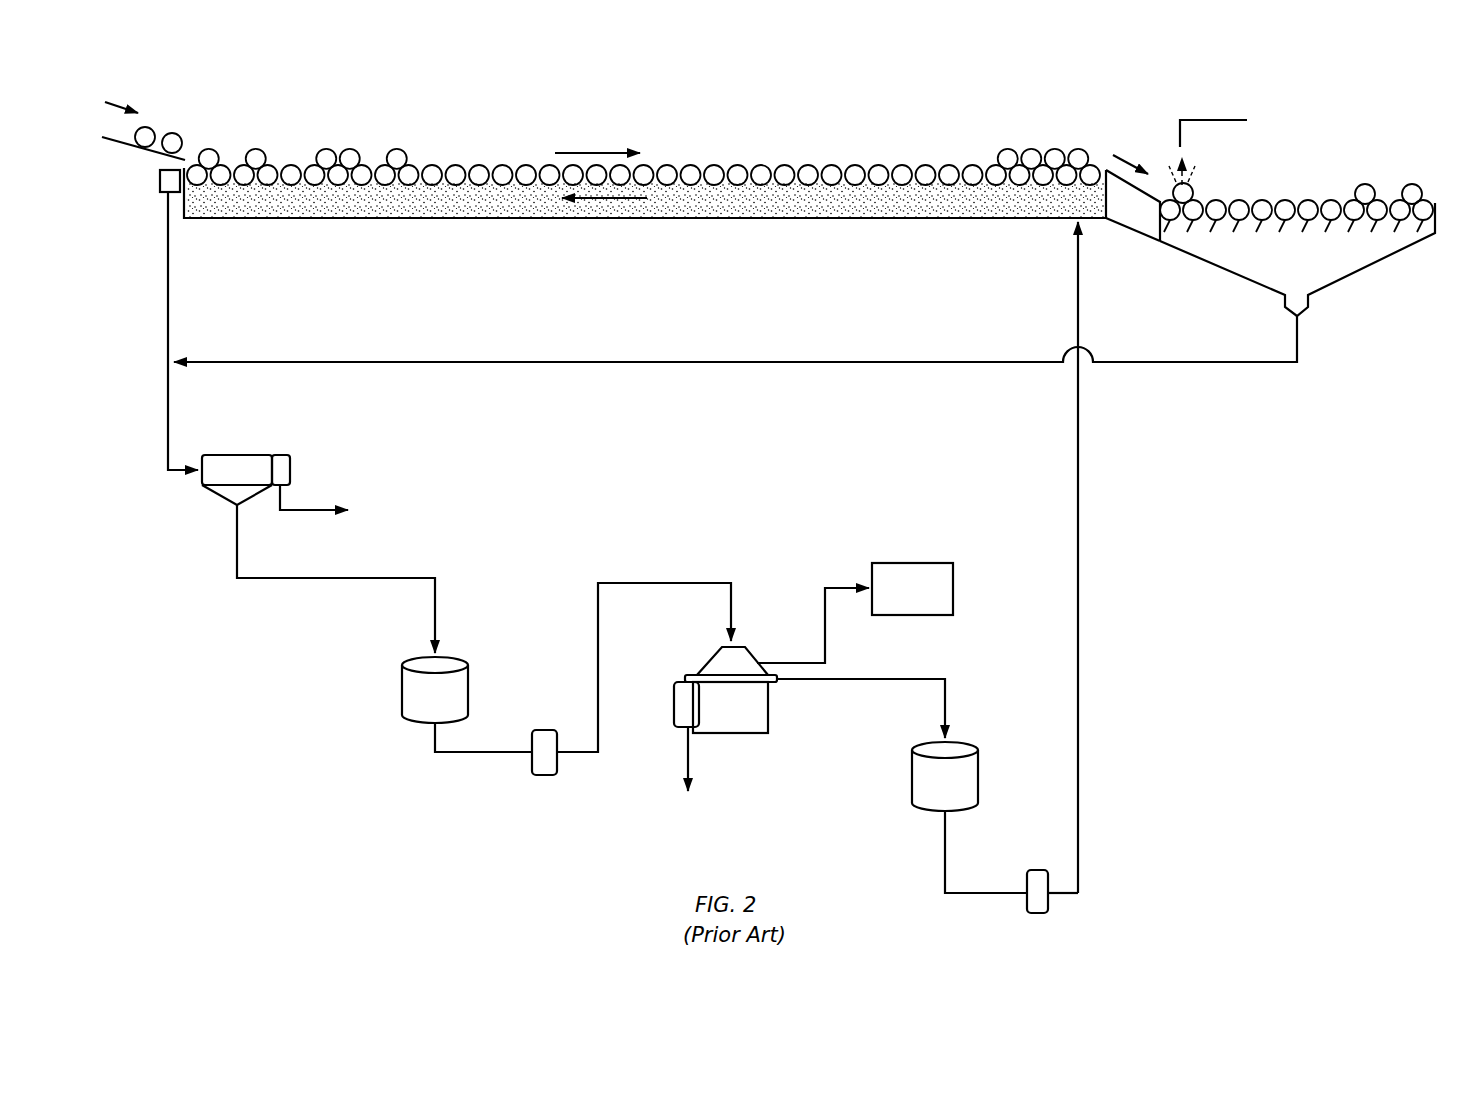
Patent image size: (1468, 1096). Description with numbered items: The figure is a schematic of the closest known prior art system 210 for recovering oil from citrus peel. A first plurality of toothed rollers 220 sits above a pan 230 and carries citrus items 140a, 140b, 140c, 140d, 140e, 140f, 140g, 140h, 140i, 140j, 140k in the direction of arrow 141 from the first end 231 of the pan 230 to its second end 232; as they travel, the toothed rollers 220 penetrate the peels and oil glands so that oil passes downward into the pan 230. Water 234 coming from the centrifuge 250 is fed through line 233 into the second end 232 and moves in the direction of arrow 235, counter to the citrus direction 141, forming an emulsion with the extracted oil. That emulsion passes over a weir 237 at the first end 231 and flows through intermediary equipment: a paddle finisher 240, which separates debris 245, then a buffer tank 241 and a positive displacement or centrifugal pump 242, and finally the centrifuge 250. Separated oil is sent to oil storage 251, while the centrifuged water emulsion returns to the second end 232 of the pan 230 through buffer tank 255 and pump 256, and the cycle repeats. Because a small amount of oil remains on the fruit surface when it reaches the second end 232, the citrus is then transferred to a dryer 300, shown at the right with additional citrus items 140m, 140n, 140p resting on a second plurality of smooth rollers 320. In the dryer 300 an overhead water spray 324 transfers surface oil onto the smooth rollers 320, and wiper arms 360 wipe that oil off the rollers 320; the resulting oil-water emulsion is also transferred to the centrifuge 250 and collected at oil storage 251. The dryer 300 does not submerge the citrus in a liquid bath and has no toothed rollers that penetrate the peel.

The citrus item 140a is at (150, 127).
The citrus item 140b is at (172, 133).
The citrus item 140c is at (208, 148).
The citrus item 140d is at (257, 148).
The citrus item 140e is at (330, 148).
The citrus item 140f is at (350, 148).
The citrus item 140g is at (399, 148).
The citrus item 140h is at (1000, 152).
The citrus item 140i is at (1028, 148).
The citrus item 140j is at (1054, 148).
The citrus item 140k is at (1079, 149).
The microsphere 140m is at (1186, 183).
The microsphere 140n is at (1365, 184).
The microsphere 140p is at (1410, 184).
The arrow 141 is at (595, 137).
The closest prior art system 210 is at (930, 80).
The toothed rollers 220 is at (697, 160).
The pan 230 is at (352, 220).
The first end 231 is at (185, 210).
The second end 232 is at (1112, 215).
The line 233 is at (1087, 497).
The water 234 is at (1072, 203).
The arrow 235 is at (600, 218).
The weir 237 is at (166, 163).
The paddle finisher 240 is at (246, 449).
The buffer tank 241 is at (400, 687).
The pump 242 is at (544, 727).
The debris 245 is at (359, 504).
The centrifuge 250 is at (738, 746).
The oil storage 251 is at (893, 604).
The buffer tank 255 is at (912, 785).
The pump 256 is at (1037, 866).
The dryer 300 is at (1332, 92).
The smooth rollers 320 is at (1232, 196).
The overhead water spray 324 is at (1195, 113).
The wiper arms 360 is at (1310, 228).